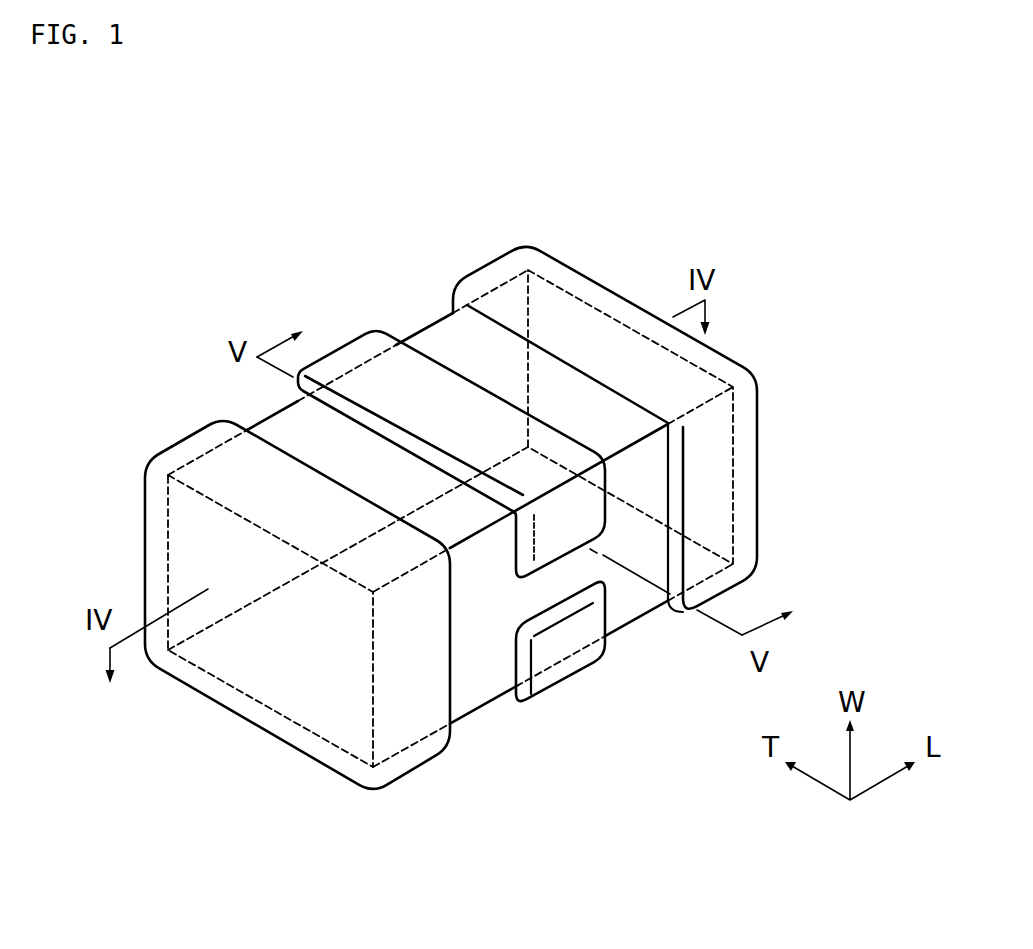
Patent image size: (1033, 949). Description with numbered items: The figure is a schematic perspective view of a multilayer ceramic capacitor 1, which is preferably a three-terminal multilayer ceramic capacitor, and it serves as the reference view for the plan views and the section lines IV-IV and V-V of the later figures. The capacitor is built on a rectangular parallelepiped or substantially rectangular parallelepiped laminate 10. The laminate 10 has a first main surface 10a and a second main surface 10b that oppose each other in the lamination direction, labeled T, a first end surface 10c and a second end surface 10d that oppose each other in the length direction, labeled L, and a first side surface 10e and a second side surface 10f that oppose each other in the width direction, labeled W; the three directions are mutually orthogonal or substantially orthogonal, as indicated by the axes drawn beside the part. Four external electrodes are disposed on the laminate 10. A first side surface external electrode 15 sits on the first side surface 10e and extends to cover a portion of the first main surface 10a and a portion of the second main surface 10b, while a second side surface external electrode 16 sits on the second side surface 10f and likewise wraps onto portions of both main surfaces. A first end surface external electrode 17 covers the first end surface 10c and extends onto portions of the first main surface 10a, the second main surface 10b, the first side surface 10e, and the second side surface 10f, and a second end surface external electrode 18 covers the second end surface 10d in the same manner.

The multilayer ceramic capacitor 1 is at (130, 295).
The laminate 10 is at (485, 336).
The first main surface 10a is at (473, 687).
The second main surface 10b is at (450, 345).
The first end surface 10c is at (219, 578).
The second end surface 10d is at (713, 460).
The first side surface 10e is at (618, 600).
The second side surface 10f is at (543, 378).
The first side surface external electrode 15 is at (572, 670).
The second side surface external electrode 16 is at (363, 358).
The first end surface external electrode 17 is at (152, 512).
The second end surface external electrode 18 is at (715, 353).